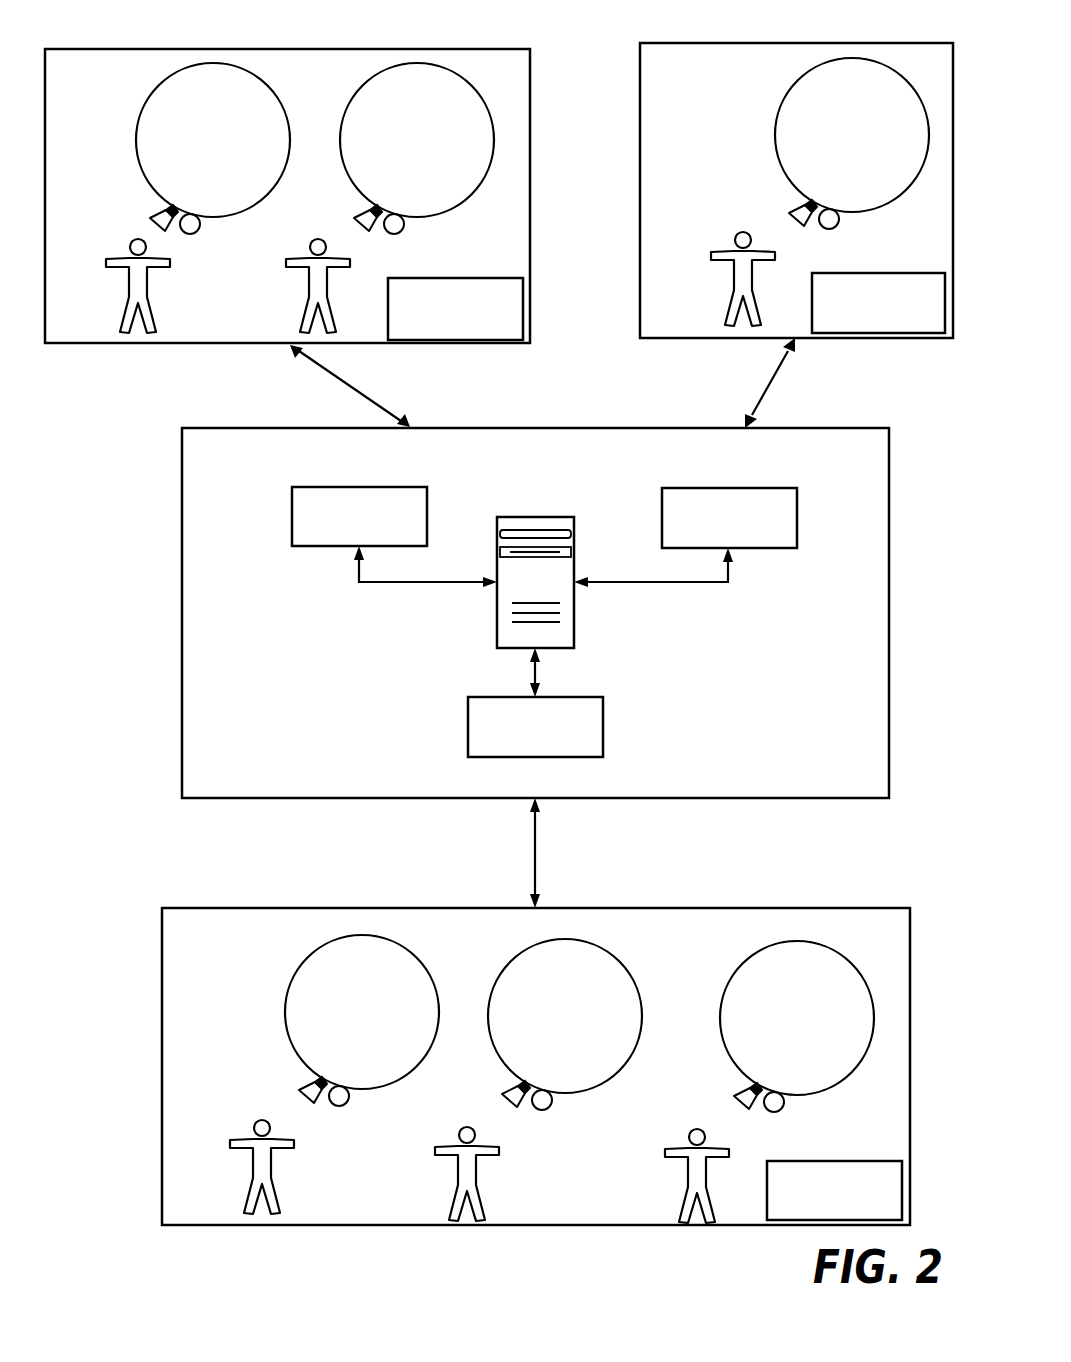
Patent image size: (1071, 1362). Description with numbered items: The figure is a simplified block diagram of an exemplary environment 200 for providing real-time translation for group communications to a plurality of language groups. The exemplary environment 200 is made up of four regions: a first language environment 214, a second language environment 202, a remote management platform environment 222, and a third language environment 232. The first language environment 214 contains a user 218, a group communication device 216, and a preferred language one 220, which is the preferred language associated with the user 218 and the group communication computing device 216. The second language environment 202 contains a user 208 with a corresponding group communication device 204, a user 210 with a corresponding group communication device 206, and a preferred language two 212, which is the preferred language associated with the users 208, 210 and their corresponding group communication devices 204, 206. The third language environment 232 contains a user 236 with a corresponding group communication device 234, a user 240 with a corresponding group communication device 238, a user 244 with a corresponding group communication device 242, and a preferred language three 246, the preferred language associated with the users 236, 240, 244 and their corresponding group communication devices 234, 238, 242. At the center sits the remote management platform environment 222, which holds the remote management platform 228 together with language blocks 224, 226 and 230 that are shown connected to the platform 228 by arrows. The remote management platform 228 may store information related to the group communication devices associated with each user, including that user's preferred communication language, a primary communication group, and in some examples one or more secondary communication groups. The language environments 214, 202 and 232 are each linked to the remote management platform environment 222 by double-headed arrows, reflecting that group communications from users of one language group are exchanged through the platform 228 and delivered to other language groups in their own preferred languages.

The exemplary environment 200 is at (917, 433).
The second language environment 202 is at (530, 49).
The group communication device 204 is at (148, 105).
The group communication device 206 is at (352, 105).
The user 208 is at (106, 264).
The user 210 is at (285, 264).
The preferred language two 212 is at (388, 278).
The first language environment 214 is at (953, 43).
The group communication device 216 is at (784, 105).
The user 218 is at (711, 257).
The preferred language one 220 is at (810, 273).
The remote management platform environment 222 is at (181, 427).
The language module 224 is at (425, 486).
The language module 226 is at (660, 489).
The remote management platform 228 is at (574, 517).
The language module 230 is at (522, 702).
The third language environment 232 is at (161, 908).
The group communication device 234 is at (293, 983).
The user 236 is at (229, 1146).
The group communication device 238 is at (500, 983).
The user 240 is at (434, 1153).
The group communication device 242 is at (730, 985).
The user 244 is at (664, 1155).
The preferred language three 246 is at (766, 1161).